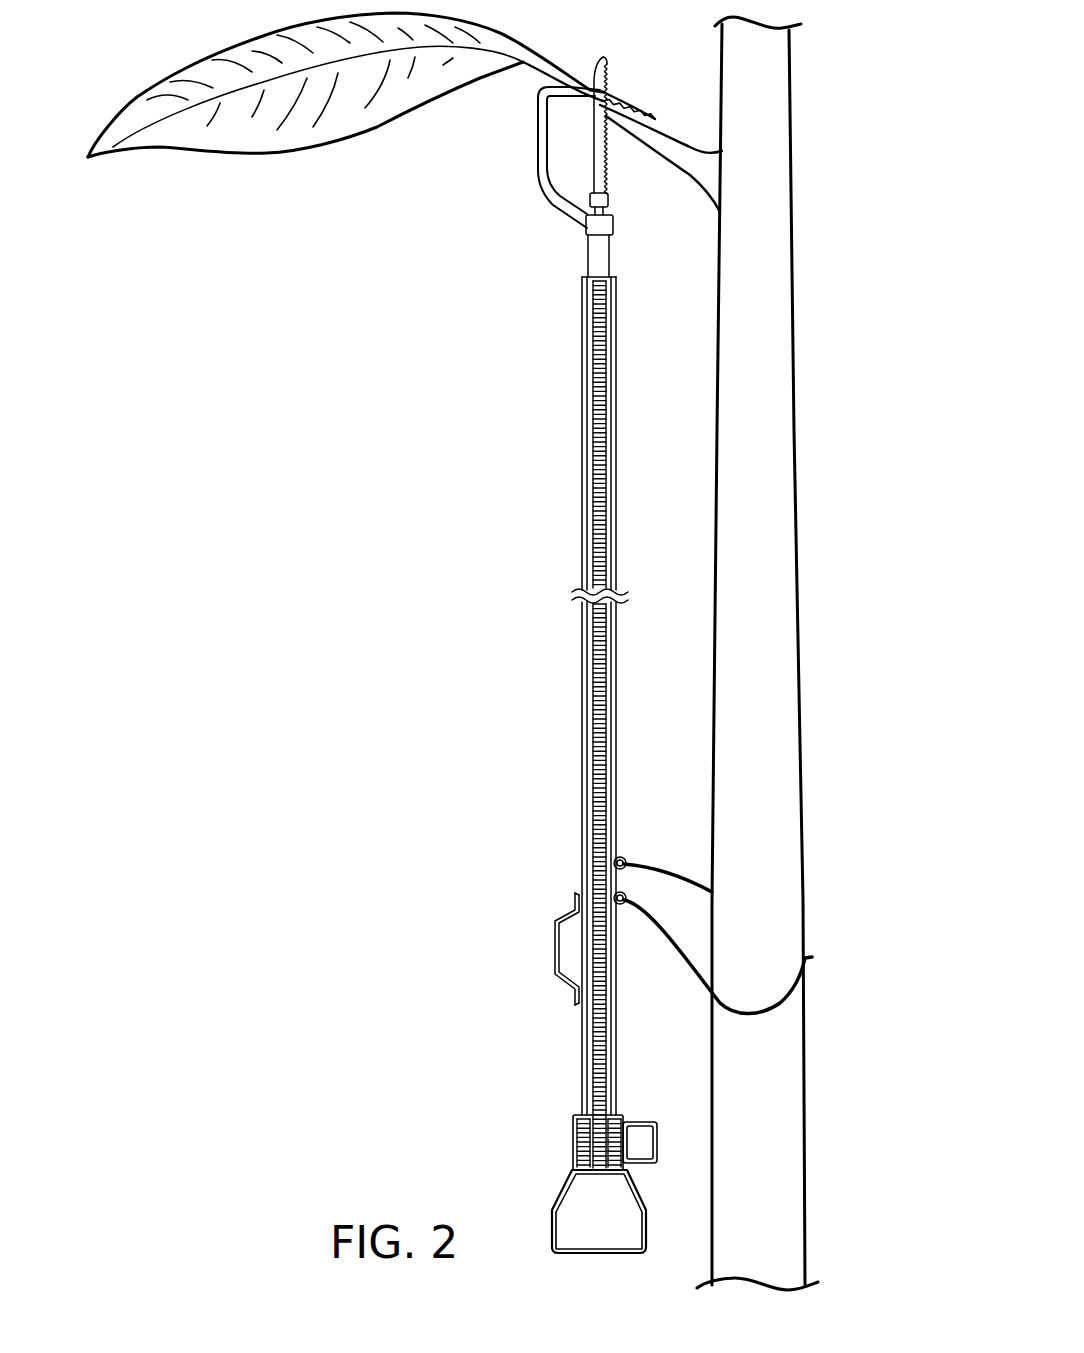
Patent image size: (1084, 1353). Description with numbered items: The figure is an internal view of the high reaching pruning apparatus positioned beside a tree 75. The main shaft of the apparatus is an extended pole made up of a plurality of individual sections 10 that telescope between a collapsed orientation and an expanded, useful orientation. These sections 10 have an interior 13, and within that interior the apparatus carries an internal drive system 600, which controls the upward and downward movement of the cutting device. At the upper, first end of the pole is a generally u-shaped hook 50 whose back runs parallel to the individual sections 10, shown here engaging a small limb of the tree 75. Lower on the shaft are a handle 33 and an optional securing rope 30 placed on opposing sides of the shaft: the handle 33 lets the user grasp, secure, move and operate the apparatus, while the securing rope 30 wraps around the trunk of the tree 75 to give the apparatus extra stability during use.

The individual sections 10 is at (618, 820).
The interior 13 is at (609, 698).
The securing rope 30 is at (812, 957).
The handle 33 is at (556, 942).
The hook 50 is at (540, 150).
The tree 75 is at (797, 408).
The internal drive system 600 is at (606, 641).